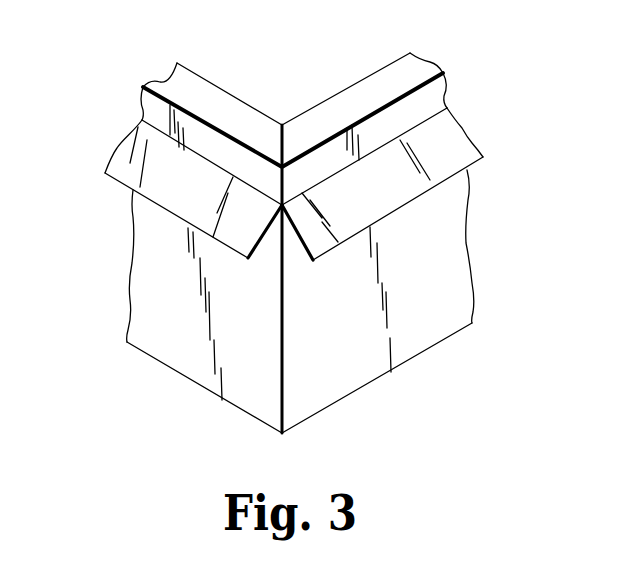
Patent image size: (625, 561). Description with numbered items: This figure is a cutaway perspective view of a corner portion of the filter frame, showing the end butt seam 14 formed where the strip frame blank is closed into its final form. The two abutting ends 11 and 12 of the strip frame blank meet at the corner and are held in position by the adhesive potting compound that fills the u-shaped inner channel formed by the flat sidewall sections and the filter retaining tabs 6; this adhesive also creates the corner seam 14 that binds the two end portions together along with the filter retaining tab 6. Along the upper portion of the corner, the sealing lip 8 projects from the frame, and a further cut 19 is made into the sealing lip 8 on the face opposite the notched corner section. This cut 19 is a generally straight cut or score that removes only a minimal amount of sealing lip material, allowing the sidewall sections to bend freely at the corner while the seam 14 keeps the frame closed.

The filter retaining tab 6 is at (381, 87).
The end butt seam 14 is at (282, 126).
The sealing lip 8 is at (120, 161).
The cut 19 is at (299, 243).
The abutting end 12 is at (282, 365).
The abutting end 11 is at (283, 340).